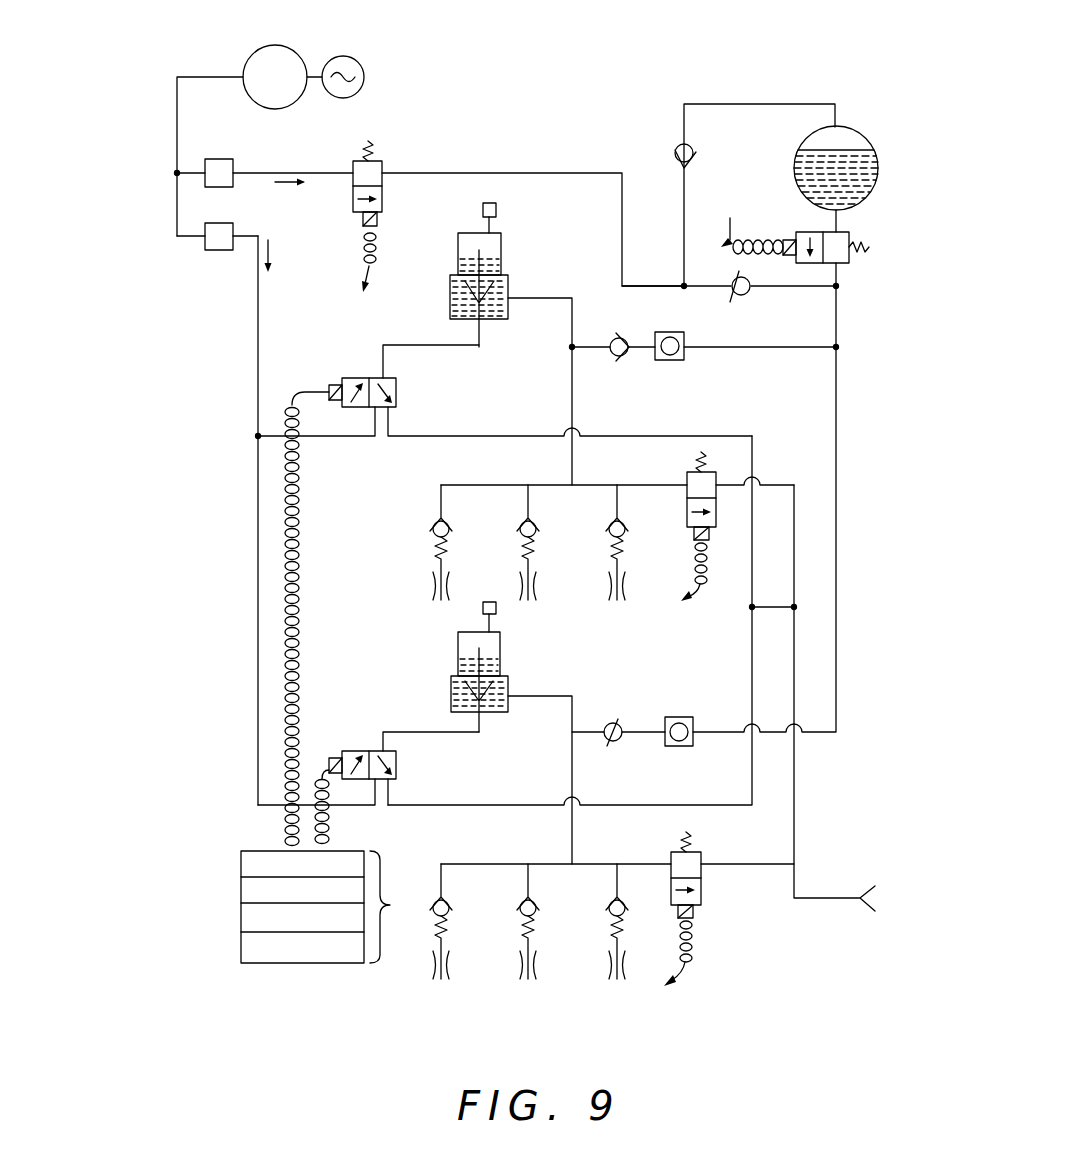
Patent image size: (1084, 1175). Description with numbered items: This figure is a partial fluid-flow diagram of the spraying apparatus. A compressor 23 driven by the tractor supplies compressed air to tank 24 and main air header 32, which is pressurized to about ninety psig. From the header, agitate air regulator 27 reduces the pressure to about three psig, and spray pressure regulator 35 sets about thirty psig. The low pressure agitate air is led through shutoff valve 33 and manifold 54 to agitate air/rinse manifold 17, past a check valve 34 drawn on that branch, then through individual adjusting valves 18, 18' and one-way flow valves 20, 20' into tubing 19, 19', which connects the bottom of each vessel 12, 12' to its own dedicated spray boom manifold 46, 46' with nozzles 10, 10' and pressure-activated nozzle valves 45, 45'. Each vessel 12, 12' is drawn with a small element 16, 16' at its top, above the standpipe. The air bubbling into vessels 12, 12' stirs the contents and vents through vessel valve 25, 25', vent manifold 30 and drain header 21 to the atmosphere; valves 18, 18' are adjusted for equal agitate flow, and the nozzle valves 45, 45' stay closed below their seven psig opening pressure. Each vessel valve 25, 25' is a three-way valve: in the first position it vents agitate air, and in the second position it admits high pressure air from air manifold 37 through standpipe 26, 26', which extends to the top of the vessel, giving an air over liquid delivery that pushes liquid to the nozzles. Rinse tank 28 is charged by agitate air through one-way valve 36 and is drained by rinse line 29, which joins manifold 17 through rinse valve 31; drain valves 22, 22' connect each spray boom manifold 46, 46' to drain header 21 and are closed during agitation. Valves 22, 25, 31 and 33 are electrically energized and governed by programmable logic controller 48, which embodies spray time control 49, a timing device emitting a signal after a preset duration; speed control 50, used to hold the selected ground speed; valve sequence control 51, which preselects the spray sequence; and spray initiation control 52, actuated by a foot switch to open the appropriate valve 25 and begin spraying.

The nozzle 10 is at (495, 586).
The nozzle 10' is at (504, 985).
The vessel 12 is at (502, 276).
The vessel 12' is at (502, 672).
The position sensor 16 is at (518, 216).
The position sensor 16' is at (514, 617).
The agitate air/rinse manifold 17 is at (838, 478).
The adjusting valve 18 is at (745, 364).
The adjusting valve 18' is at (699, 718).
The tubing 19 is at (541, 391).
The tubing 19' is at (540, 780).
The flow valve 20 is at (613, 328).
The flow valve 20' is at (618, 709).
The drain header 21 is at (796, 546).
The drain valve 22 is at (668, 538).
The drain valve 22' is at (654, 921).
The compressor 23 is at (356, 64).
The tank 24 is at (291, 46).
The vessel valve 25 is at (504, 390).
The vessel valve 25' is at (368, 776).
The standpipe 26 is at (445, 296).
The standpipe 26' is at (441, 688).
The regulating valve 27 is at (229, 160).
The rinse tank 28 is at (849, 134).
The rinse line 29 is at (843, 223).
The vent manifold 30 is at (752, 669).
The rinse valve 31 is at (851, 265).
The main air header 32 is at (176, 93).
The shutoff valve 33 is at (384, 163).
The check valve 34 is at (734, 297).
The regulator 35 is at (234, 229).
The one-way valve 36 is at (679, 145).
The air manifold 37 is at (256, 598).
The nozzle valve 45 is at (501, 542).
The nozzle valve 45' is at (529, 921).
The spray boom manifold 46 is at (617, 471).
The spray boom manifold 46' is at (617, 846).
The programmable logic controller 48 is at (328, 907).
The spray time control 49 is at (241, 866).
The speed control 50 is at (241, 891).
The valve sequence control 51 is at (241, 918).
The spray initiation control 52 is at (241, 946).
The manifold 54 is at (548, 172).